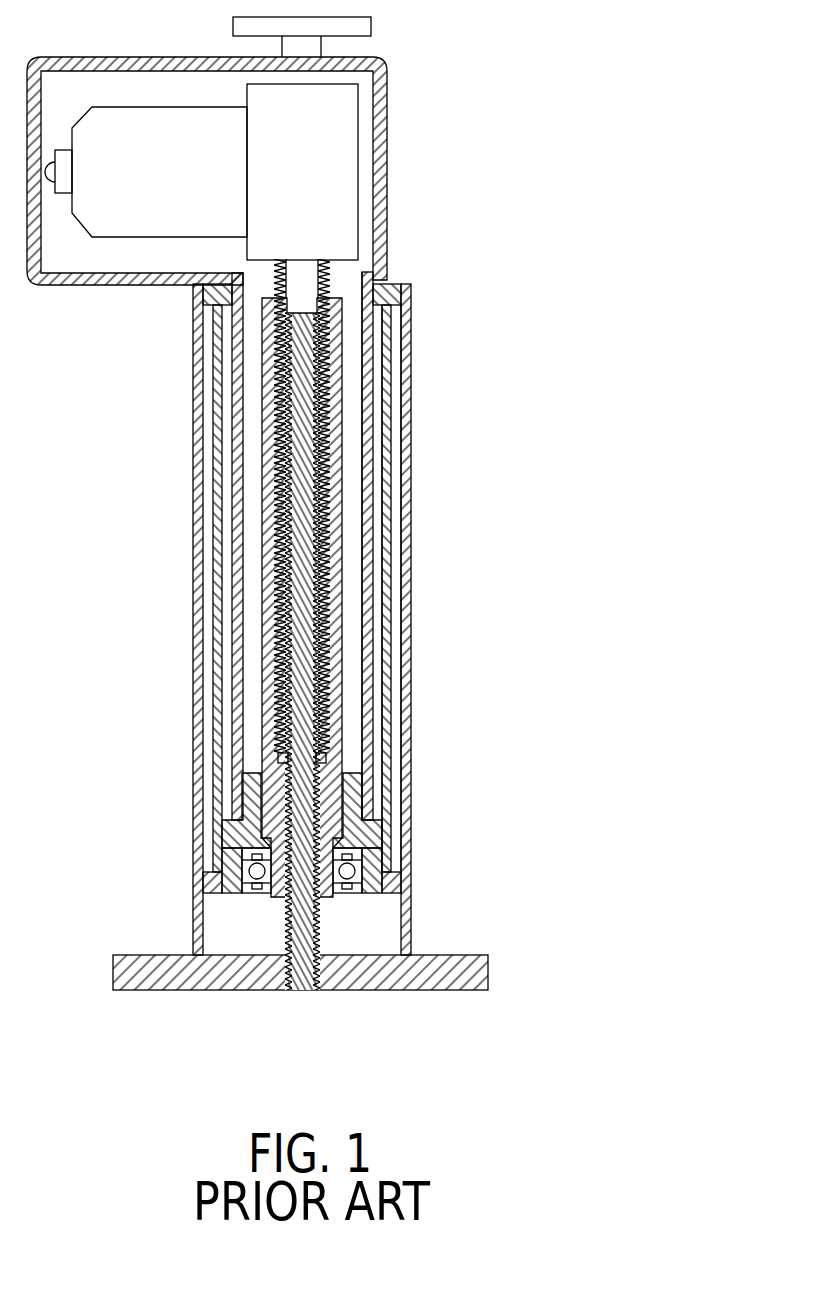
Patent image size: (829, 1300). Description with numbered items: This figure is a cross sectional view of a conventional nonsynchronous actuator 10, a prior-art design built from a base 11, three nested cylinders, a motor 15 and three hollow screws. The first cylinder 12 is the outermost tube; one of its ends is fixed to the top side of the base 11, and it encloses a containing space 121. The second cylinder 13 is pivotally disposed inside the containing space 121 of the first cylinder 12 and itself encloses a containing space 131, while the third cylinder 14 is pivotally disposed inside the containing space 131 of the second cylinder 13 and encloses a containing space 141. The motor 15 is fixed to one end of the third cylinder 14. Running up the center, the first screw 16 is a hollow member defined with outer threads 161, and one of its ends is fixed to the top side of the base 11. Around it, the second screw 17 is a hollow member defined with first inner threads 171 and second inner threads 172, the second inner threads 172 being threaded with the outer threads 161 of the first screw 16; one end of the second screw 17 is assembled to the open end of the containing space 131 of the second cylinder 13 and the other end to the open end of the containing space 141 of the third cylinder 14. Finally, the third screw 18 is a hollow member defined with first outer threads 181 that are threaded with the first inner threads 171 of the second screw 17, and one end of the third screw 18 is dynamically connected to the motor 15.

The nonsynchronous actuator 10 is at (442, 150).
The base 11 is at (452, 965).
The first cylinder 12 is at (405, 678).
The containing space 121 is at (395, 602).
The second cylinder 13 is at (383, 538).
The containing space 131 is at (377, 482).
The third cylinder 14 is at (363, 445).
The containing space 141 is at (352, 420).
The motor 15 is at (343, 113).
The first screw 16 is at (318, 933).
The outer threads 161 is at (275, 573).
The second screw 17 is at (335, 817).
The first inner threads 171 is at (275, 573).
The second inner threads 172 is at (278, 470).
The third screw 18 is at (330, 277).
The first outer threads 181 is at (278, 470).